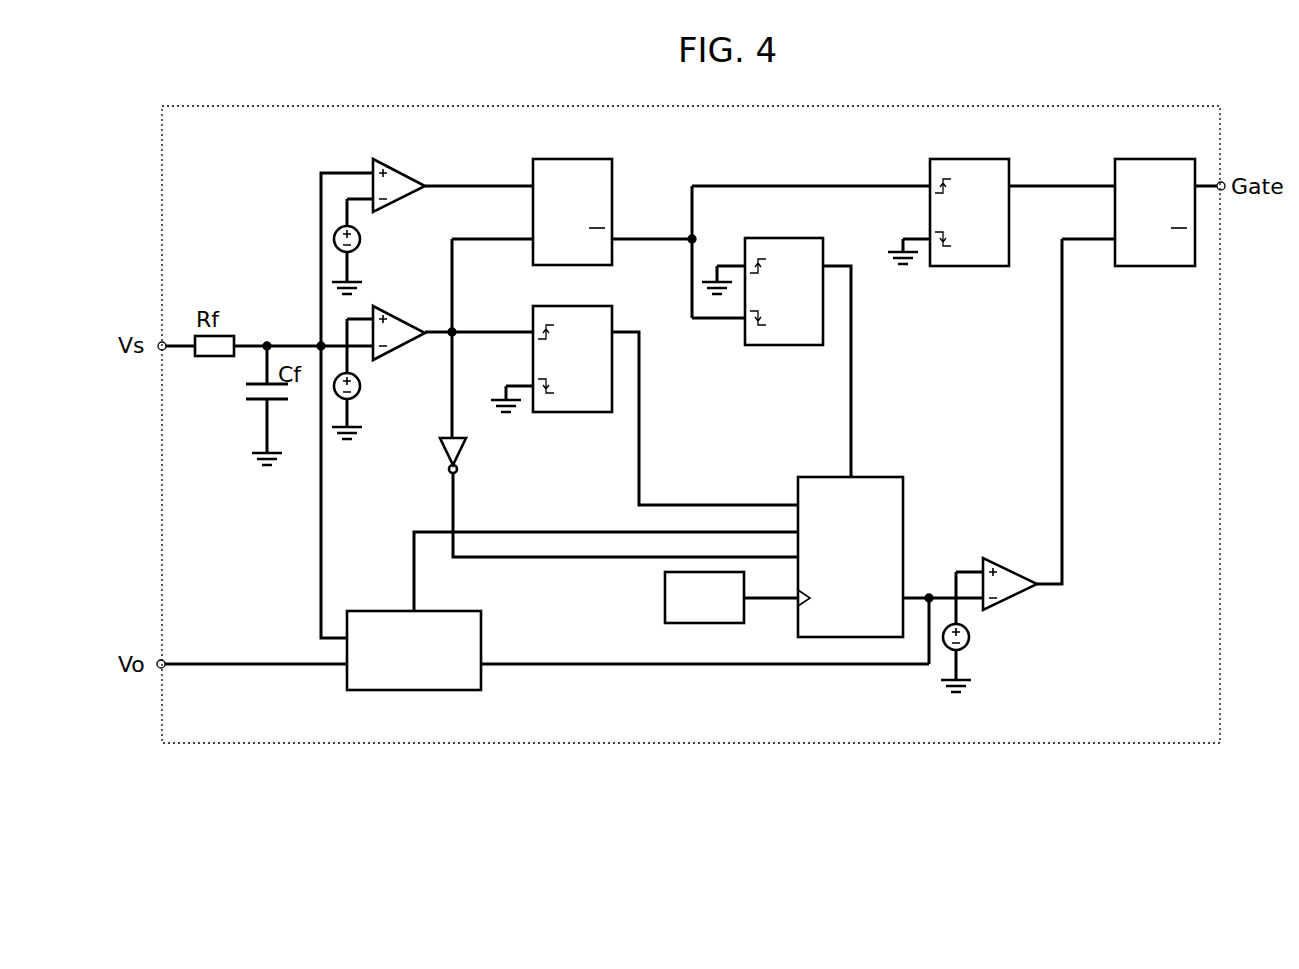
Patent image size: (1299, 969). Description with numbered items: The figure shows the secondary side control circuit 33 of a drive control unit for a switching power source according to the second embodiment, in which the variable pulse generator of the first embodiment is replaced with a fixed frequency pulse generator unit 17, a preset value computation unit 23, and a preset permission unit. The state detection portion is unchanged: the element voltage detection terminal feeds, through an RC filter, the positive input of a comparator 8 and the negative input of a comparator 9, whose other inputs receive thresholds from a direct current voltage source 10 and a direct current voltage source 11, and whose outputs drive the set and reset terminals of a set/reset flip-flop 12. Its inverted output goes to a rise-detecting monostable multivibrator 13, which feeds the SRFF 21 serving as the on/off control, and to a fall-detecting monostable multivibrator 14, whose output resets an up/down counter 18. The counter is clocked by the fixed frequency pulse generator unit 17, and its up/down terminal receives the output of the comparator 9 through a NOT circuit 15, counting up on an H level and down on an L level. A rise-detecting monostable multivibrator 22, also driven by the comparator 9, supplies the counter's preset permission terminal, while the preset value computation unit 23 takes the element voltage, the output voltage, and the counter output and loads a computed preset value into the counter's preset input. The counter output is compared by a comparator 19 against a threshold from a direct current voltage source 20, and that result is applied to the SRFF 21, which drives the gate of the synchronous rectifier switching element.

The comparator 8 is at (373, 159).
The comparator 9 is at (400, 319).
The direct current voltage source 10 is at (334, 239).
The direct current voltage source 11 is at (362, 386).
The set/reset flip-flop 12 is at (533, 159).
The monostable multivibrator 13 is at (930, 159).
The monostable multivibrator 14 is at (745, 345).
The NOT circuit 15 is at (445, 452).
The fixed frequency pulse generator unit 17 is at (665, 623).
The up/down counter 18 is at (798, 477).
The comparator 19 is at (1007, 600).
The direct current voltage source 20 is at (969, 637).
The SRFF 21 is at (1155, 266).
The monostable multivibrator 22 is at (533, 414).
The preset value computation unit 23 is at (480, 610).
The secondary side control circuit 33 is at (1220, 743).